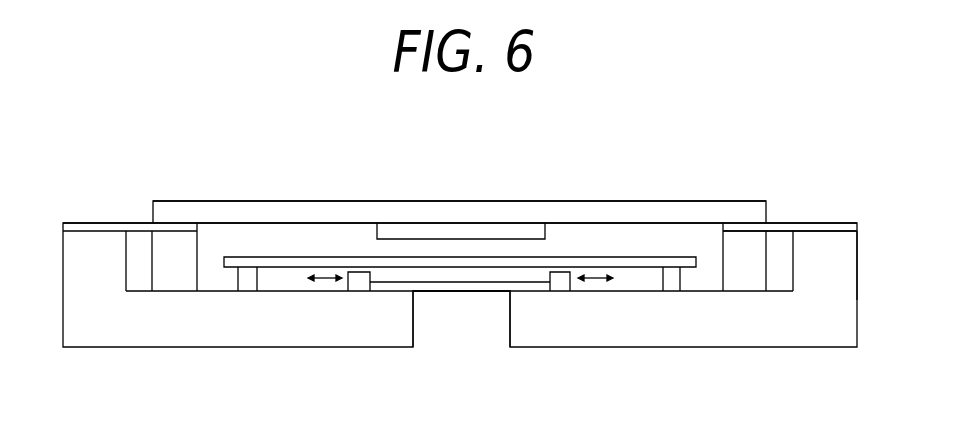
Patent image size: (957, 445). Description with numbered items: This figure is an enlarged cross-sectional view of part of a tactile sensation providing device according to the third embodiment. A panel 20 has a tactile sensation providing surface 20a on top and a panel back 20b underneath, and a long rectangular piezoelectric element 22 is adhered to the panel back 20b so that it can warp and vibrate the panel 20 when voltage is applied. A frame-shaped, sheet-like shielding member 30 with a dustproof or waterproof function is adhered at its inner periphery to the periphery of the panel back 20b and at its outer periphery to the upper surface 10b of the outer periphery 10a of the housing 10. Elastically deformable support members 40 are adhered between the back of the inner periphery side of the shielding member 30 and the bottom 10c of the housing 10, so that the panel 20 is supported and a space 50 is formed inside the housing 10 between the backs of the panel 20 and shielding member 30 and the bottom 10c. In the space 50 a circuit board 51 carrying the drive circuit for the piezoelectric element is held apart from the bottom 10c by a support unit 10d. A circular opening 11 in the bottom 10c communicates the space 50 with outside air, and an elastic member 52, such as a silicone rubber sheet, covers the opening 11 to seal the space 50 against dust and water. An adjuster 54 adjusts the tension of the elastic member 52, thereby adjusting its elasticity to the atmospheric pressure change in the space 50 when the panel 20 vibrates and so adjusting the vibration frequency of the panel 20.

The housing 10 is at (819, 348).
The outer periphery of the housing 10a is at (847, 240).
The upper surface of the outer periphery 10b is at (804, 231).
The bottom of the housing 10c is at (636, 291).
The support unit 10d is at (248, 283).
The opening 11 is at (413, 322).
The panel 20 is at (556, 212).
The tactile sensation providing surface 20a is at (276, 200).
The panel back 20b is at (303, 223).
The piezoelectric element 22 is at (453, 234).
The shielding member 30 is at (107, 222).
The support member 40 is at (173, 283).
The space 50 is at (238, 246).
The circuit board 51 is at (619, 257).
The elastic member 52 is at (462, 288).
The adjuster 54 is at (360, 283).